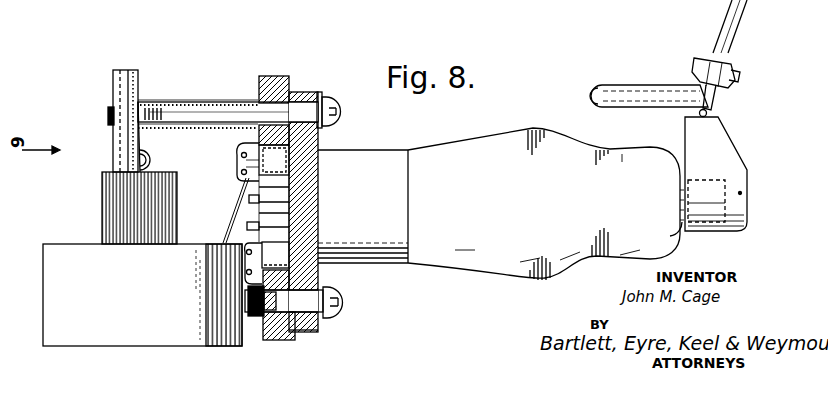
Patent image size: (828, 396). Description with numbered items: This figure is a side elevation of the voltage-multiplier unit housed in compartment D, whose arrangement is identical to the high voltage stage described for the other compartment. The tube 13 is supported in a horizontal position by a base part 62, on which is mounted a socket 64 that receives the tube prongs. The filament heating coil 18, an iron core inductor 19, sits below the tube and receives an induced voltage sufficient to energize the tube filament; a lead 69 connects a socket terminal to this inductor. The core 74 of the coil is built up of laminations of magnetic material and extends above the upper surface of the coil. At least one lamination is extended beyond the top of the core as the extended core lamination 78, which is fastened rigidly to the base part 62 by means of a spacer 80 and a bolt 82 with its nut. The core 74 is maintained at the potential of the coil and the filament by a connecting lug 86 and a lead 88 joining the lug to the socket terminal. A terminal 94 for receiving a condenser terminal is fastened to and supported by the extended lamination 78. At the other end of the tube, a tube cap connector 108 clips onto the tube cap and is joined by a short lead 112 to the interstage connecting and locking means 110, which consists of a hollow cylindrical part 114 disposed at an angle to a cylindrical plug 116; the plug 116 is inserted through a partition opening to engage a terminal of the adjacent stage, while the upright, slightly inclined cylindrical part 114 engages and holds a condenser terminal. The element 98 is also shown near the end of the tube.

The tube 13 is at (533, 128).
The filament heating coil 18 is at (142, 333).
The iron core inductor 19 is at (159, 8).
The base part 62 is at (276, 340).
The socket 64 is at (312, 330).
The lead 69 is at (231, 203).
The core 74 is at (178, 194).
The extended core lamination 78 is at (143, 151).
The spacer 80 is at (200, 130).
The bolt 82 is at (331, 103).
The connecting lug 86 is at (259, 100).
The lead 88 is at (248, 133).
The terminal 94 is at (128, 88).
The casing knob end 98 is at (682, 224).
The tube cap connector 108 is at (726, 156).
The interstage connecting and locking means 110 is at (686, 56).
The short lead 112 is at (708, 112).
The hollow cylindrical part 114 is at (633, 89).
The cylindrical plug 116 is at (735, 50).